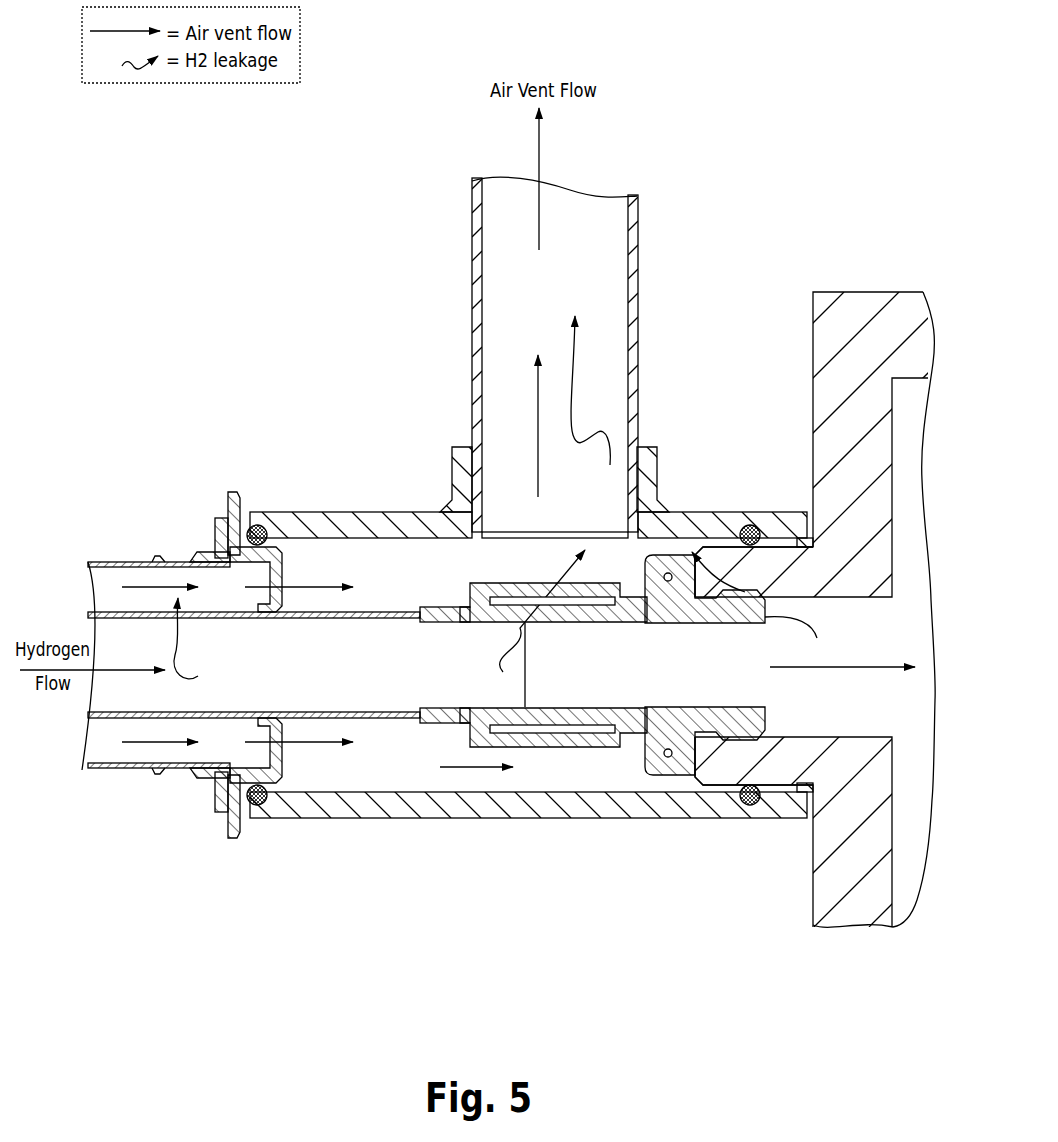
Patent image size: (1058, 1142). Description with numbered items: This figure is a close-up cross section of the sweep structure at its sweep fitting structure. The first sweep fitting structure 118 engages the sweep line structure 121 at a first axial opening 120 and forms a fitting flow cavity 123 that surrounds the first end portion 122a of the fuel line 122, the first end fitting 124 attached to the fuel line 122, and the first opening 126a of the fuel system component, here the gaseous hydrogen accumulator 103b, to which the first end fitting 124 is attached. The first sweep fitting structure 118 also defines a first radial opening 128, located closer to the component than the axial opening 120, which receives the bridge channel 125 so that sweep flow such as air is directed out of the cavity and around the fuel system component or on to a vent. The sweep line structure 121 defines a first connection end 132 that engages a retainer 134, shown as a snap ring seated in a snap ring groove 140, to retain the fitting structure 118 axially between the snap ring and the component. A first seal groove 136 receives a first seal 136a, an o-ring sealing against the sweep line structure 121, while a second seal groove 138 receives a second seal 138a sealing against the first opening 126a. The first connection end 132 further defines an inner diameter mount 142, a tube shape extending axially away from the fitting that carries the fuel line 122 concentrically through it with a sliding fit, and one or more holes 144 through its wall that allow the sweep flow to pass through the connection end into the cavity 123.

The gaseous hydrogen accumulator 103b is at (859, 326).
The first sweep fitting structure 118 is at (430, 527).
The first axial opening 120 is at (232, 800).
The sweep line structure 121 is at (114, 769).
The fuel line 122 is at (118, 618).
The first end portion of the fuel line 122a is at (462, 735).
The fitting flow cavity 123 is at (407, 590).
The first end fitting 124 is at (596, 762).
The bridge channel 125 is at (636, 297).
The first opening of the fuel system component 126a is at (790, 757).
The first radial opening 128 is at (458, 447).
The first connection end 132 is at (283, 556).
The retainer 134 is at (222, 517).
The first seal groove 136 is at (237, 497).
The first seal 136a is at (262, 527).
The second seal groove 138 is at (727, 530).
The second seal 138a is at (750, 525).
The snap ring groove 140 is at (213, 775).
The inner diameter mount 142 is at (250, 616).
The holes 144 is at (280, 740).